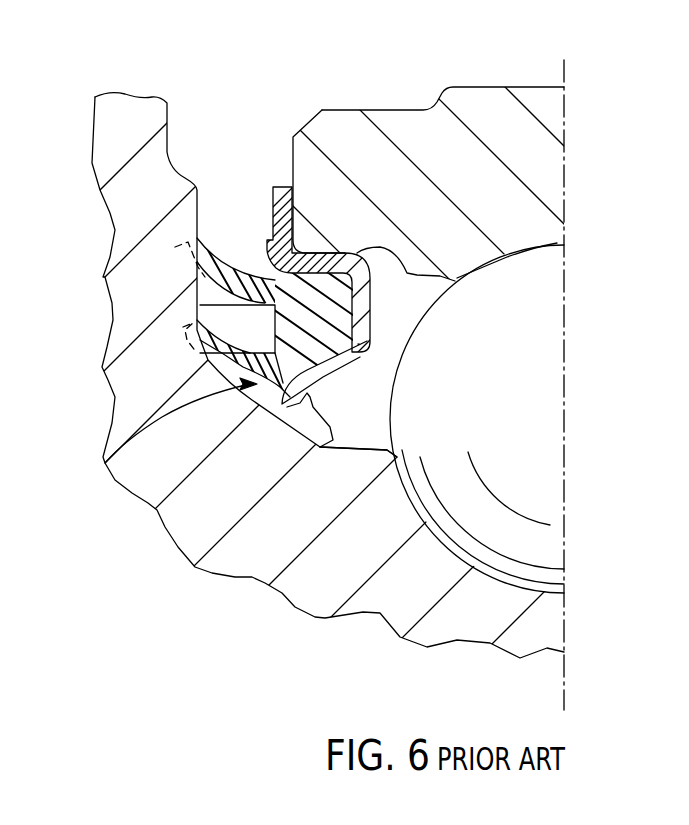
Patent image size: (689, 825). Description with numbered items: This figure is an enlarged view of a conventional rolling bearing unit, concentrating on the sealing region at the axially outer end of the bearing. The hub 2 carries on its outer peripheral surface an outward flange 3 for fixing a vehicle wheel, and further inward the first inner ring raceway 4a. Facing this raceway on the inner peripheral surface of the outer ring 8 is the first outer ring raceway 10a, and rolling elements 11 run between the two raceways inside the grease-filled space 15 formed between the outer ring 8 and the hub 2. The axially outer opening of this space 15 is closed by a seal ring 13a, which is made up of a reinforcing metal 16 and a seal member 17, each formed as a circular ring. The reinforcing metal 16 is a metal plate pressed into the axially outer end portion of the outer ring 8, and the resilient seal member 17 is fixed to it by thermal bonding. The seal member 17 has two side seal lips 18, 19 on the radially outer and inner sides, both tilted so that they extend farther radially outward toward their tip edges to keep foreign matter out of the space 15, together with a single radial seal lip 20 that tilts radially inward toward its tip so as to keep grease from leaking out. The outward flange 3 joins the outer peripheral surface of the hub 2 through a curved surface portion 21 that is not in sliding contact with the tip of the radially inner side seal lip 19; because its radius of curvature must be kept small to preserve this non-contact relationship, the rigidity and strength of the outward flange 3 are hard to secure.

The hub 2 is at (125, 112).
The outward flange 3 is at (153, 115).
The first inner ring raceway 4a is at (507, 568).
The outer ring 8 is at (423, 118).
The first outer ring raceway 10a is at (533, 249).
The rolling elements 11 is at (543, 346).
The seal ring 13a is at (208, 362).
The space 15 is at (367, 437).
The reinforcing metal 16 is at (331, 257).
The seal member 17 is at (208, 360).
The radially outer side seal lip 18 is at (202, 250).
The radially inner side seal lip 19 is at (190, 323).
The radial seal lip 20 is at (320, 447).
The curved surface portion 21 is at (250, 410).